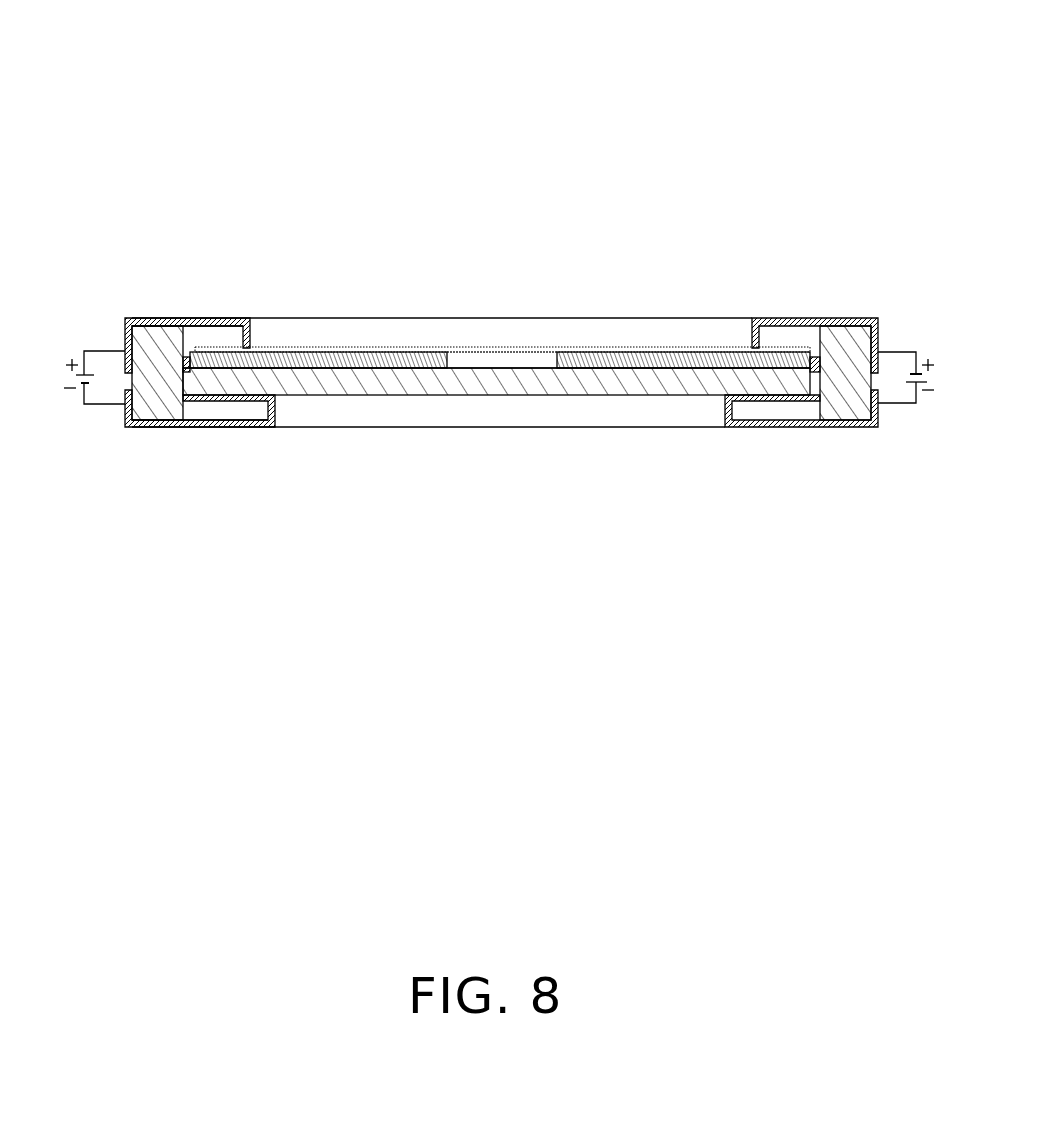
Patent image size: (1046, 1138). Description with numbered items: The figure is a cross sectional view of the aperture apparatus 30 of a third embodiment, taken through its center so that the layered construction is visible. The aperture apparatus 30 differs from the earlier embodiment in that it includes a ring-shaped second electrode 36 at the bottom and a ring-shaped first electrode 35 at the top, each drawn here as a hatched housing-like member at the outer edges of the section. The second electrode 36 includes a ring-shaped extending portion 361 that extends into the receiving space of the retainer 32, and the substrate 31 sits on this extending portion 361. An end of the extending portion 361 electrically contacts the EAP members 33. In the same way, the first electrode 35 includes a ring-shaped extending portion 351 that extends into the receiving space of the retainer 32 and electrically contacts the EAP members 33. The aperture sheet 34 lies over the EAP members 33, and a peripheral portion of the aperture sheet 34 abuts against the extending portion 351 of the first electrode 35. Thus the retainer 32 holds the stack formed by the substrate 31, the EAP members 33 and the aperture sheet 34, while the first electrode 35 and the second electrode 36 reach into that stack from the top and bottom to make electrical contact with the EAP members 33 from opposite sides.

The aperture apparatus 30 is at (358, 88).
The substrate 31 is at (612, 377).
The retainer 32 is at (148, 419).
The EAP members 33 is at (388, 370).
The aperture sheet 34 is at (393, 366).
The first electrode 35 is at (126, 322).
The extending portion 351 is at (213, 319).
The second electrode 36 is at (126, 406).
The extending portion 361 is at (226, 430).